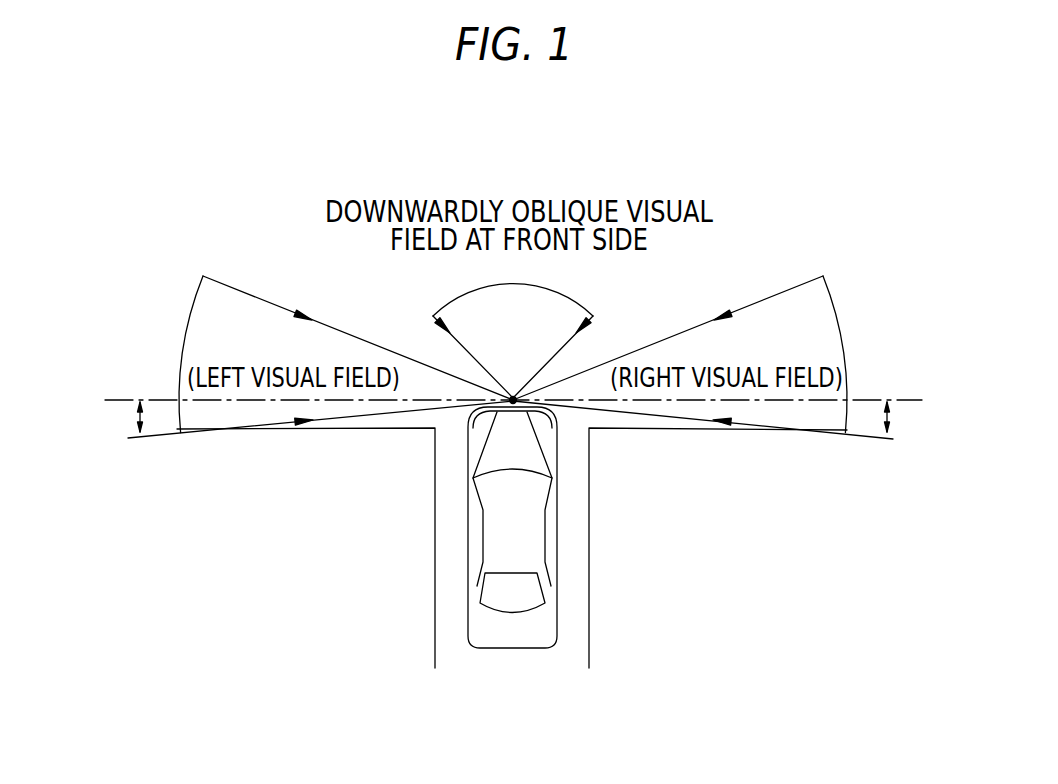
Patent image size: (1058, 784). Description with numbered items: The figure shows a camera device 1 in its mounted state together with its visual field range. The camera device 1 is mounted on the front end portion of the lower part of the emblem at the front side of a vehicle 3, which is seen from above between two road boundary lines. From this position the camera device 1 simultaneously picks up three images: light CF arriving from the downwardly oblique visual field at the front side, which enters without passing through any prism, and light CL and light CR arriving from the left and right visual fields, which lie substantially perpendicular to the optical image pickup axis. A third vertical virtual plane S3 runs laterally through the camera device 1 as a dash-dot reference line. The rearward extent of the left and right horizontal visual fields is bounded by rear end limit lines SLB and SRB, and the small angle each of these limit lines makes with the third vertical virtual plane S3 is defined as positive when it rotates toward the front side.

The camera device 1 is at (513, 382).
The vehicle 3 is at (513, 664).
The light from front visual field CF is at (433, 316).
The light from left visual field CL is at (258, 296).
The light from right visual field CR is at (780, 294).
The rear end limit line SLB is at (185, 436).
The rear end limit line SRB is at (837, 434).
The third vertical virtual plane S3 is at (127, 397).